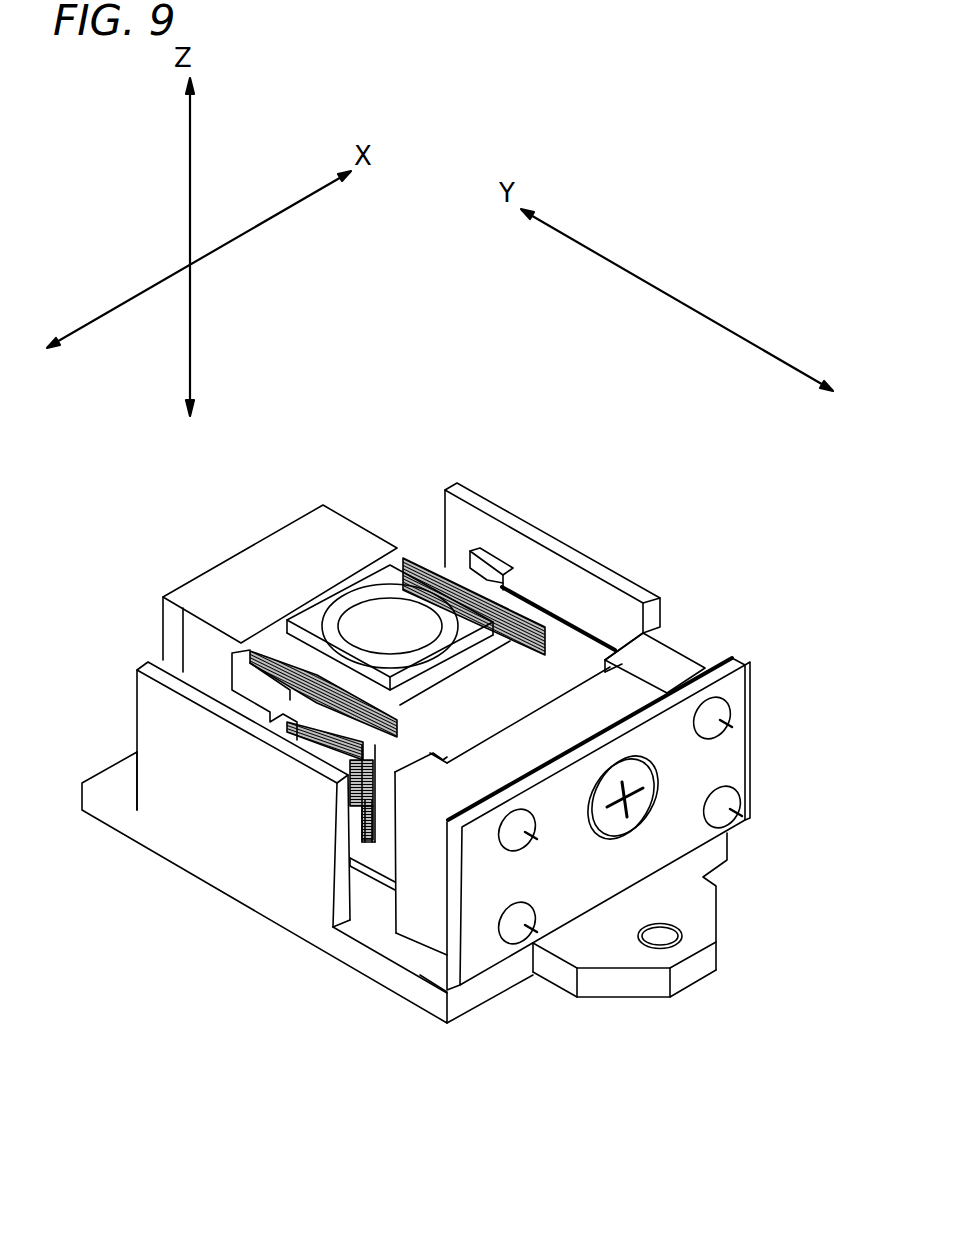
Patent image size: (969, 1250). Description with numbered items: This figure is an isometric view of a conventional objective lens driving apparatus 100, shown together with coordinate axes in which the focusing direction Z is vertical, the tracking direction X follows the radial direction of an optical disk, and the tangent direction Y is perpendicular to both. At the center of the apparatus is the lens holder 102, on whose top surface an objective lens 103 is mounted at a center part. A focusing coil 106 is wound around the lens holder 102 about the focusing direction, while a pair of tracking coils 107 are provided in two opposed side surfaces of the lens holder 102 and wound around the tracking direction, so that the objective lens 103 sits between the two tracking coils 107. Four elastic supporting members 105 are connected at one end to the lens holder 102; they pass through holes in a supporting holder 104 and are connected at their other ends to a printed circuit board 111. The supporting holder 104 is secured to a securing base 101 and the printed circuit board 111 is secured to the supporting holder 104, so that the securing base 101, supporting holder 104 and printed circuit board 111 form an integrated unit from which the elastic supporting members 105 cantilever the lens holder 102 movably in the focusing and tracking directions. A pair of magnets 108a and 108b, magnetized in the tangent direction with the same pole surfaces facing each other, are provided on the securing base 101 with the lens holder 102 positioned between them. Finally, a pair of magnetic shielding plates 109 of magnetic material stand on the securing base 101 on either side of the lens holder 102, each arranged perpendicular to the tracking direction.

The objective lens driving apparatus 100 is at (717, 158).
The securing base 101 is at (607, 958).
The lens holder 102 is at (487, 567).
The objective lens 103 is at (417, 622).
The supporting holder 104 is at (663, 677).
The elastic supporting members 105 is at (563, 613).
The focusing coil 106 is at (363, 802).
The tracking coils 107 is at (263, 646).
The magnet 108a is at (235, 590).
The magnet 108b is at (547, 678).
The magnetic shielding plates 109 is at (187, 770).
The printed circuit board 111 is at (740, 748).